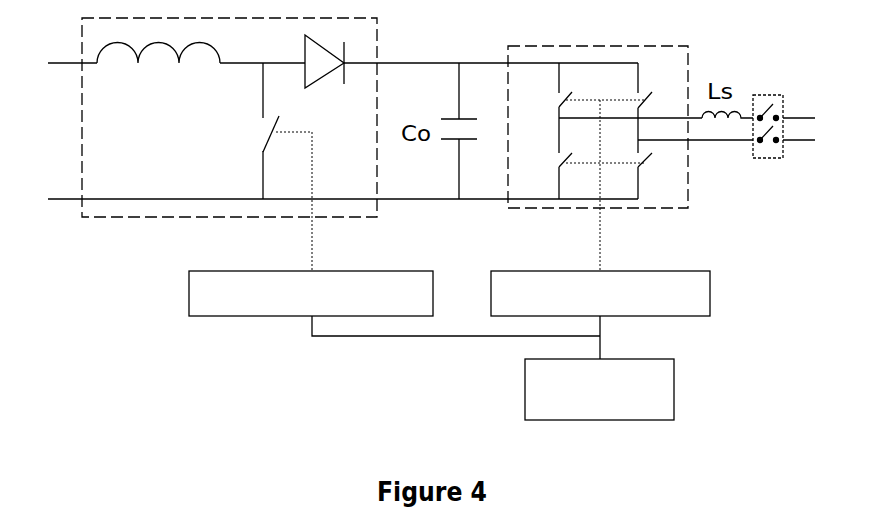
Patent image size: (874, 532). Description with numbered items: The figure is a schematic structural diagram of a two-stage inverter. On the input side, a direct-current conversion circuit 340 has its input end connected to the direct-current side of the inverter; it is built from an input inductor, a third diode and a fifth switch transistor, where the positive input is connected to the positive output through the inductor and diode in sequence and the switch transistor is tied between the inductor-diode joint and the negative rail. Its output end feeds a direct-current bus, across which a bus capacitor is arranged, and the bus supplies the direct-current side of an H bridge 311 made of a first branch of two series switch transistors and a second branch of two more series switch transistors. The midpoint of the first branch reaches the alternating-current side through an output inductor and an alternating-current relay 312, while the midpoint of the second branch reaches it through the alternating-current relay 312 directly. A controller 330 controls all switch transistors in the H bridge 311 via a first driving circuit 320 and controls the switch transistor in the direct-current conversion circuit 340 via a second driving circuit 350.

The H bridge 311 is at (689, 62).
The alternating-current relay 312 is at (770, 158).
The first driving circuit 320 is at (710, 282).
The controller 330 is at (674, 398).
The direct-current conversion circuit 340 is at (378, 211).
The second driving circuit 350 is at (189, 285).